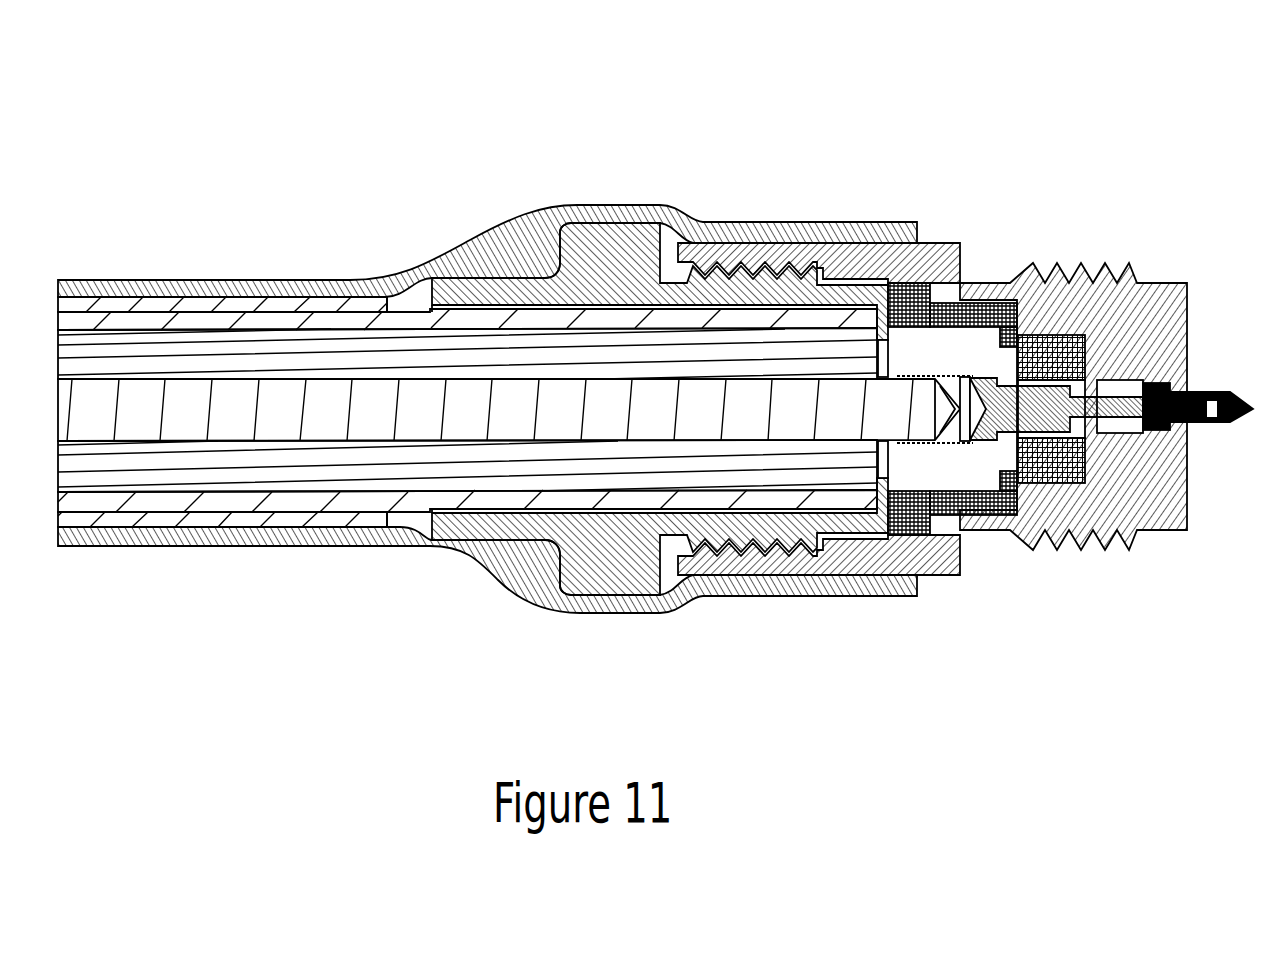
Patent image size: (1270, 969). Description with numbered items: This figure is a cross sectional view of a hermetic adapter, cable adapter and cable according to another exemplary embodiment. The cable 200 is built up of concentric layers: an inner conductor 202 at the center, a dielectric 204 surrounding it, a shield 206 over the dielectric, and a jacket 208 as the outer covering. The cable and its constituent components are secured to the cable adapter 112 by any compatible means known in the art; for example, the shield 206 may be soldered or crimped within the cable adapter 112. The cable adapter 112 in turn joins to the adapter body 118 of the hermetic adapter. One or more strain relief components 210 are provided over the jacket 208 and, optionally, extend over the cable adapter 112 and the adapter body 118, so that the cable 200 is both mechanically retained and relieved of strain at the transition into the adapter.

The cable 200 is at (274, 577).
The inner conductor 202 is at (793, 413).
The dielectric 204 is at (788, 350).
The shield 206 is at (578, 322).
The jacket 208 is at (290, 305).
The strain relief component 210 is at (520, 255).
The cable adapter 112 is at (610, 570).
The adapter body 118 is at (1113, 518).